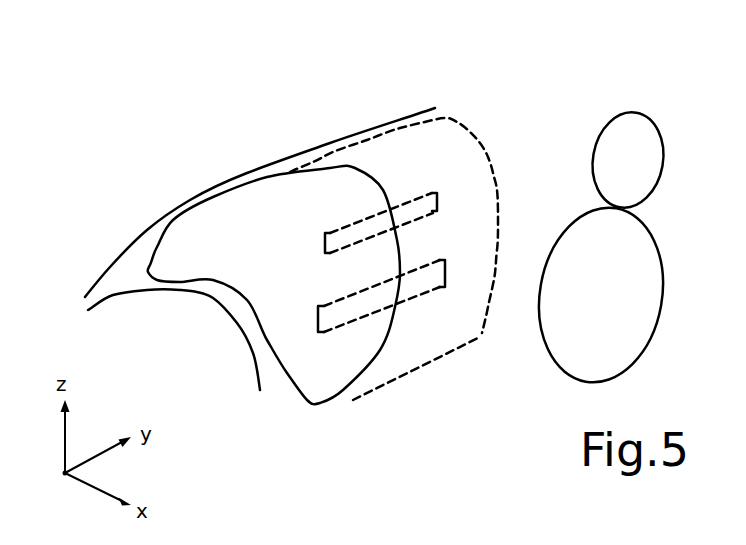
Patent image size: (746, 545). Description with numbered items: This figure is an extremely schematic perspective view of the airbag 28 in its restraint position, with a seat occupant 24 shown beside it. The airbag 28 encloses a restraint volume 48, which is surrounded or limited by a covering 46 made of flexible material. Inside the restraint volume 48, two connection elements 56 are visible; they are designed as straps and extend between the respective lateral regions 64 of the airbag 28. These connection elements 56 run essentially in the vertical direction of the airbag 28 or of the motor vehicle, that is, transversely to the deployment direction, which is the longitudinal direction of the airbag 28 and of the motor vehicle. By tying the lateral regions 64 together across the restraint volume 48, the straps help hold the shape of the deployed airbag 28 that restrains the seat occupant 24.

The seat occupant 24 is at (648, 257).
The airbag 28 is at (534, 79).
The covering 46 is at (480, 143).
The restraint volume 48 is at (273, 253).
The connection elements 56 is at (390, 228).
The lateral regions 64 is at (337, 372).